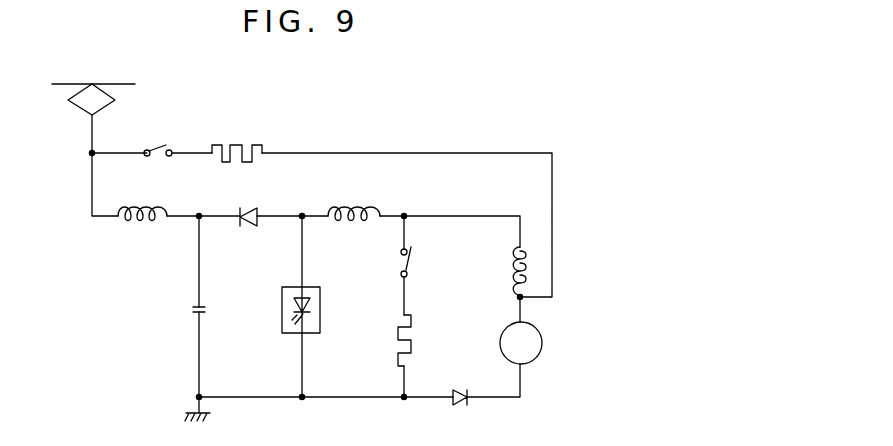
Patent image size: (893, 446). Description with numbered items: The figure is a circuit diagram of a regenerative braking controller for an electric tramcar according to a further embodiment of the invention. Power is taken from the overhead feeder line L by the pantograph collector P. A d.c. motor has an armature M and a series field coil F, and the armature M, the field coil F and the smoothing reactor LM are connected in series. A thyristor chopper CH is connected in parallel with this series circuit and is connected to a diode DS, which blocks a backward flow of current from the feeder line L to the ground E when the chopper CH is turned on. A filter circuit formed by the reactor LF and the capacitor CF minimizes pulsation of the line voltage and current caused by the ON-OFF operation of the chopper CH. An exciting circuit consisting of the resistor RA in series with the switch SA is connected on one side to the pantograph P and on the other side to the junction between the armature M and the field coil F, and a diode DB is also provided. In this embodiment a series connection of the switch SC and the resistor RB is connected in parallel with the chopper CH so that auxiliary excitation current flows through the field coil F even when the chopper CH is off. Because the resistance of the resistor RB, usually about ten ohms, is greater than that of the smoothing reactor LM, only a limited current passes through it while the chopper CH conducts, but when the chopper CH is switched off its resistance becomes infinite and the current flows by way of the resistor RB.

The overhead feeder line L is at (112, 83).
The pantograph collector P is at (115, 100).
The switch SA is at (163, 140).
The resistor RA is at (243, 140).
The reactor LF is at (145, 228).
The diode DS is at (245, 207).
The smoothing reactor LM is at (352, 208).
The capacitor CF is at (207, 310).
The thyristor chopper CH is at (322, 300).
The switch SC is at (411, 265).
The resistor RB is at (413, 343).
The series field coil F is at (506, 272).
The armature M is at (521, 343).
The diode DB is at (466, 405).
The ground E is at (208, 416).